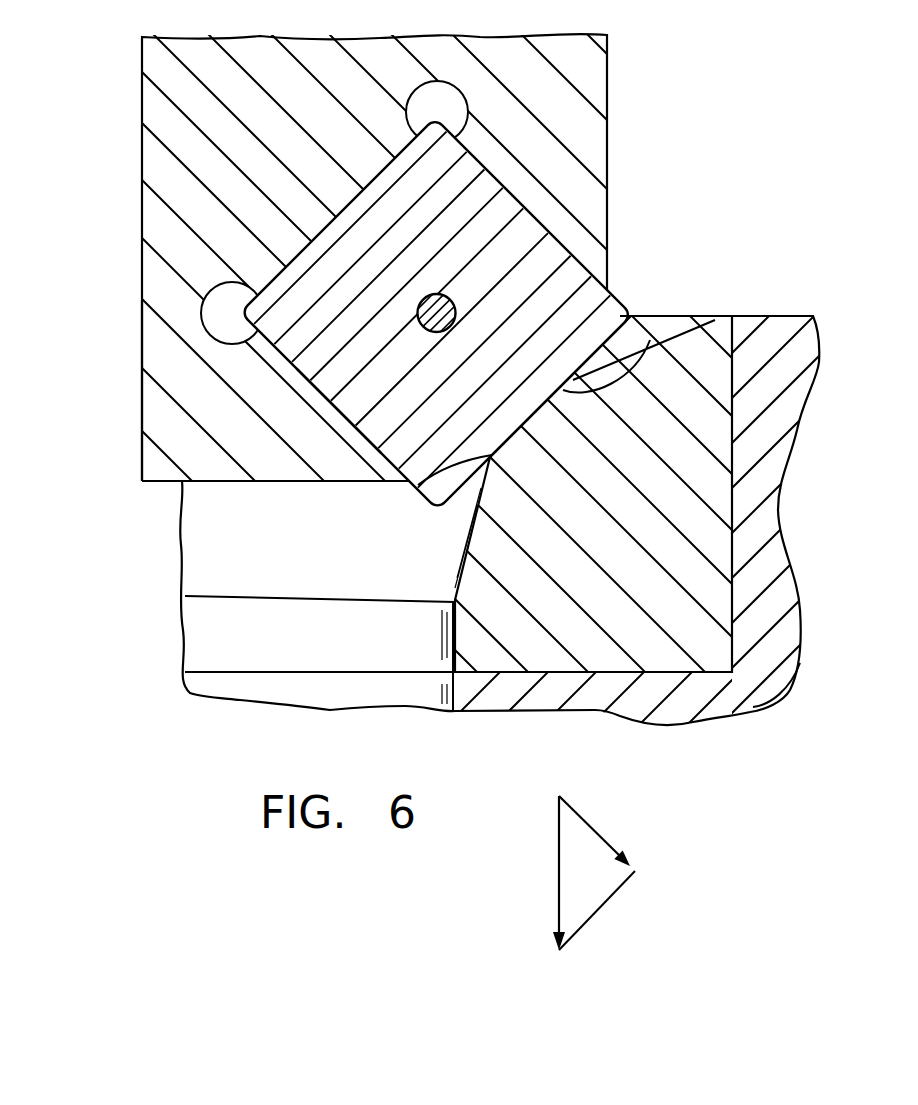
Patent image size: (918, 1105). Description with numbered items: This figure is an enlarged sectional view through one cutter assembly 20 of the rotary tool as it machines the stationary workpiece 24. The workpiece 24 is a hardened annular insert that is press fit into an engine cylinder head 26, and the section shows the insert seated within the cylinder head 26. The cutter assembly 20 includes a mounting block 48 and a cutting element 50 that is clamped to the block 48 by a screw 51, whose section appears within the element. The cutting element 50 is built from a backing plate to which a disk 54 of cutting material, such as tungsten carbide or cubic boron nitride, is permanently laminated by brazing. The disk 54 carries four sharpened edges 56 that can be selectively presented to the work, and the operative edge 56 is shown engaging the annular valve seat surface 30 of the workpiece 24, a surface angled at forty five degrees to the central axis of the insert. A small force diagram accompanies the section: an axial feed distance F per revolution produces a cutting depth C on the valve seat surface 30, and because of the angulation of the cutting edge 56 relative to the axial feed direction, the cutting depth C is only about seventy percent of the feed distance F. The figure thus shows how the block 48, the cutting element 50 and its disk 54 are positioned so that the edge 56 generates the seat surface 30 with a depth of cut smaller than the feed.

The cutter assembly 20 is at (130, 488).
The workpiece 24 is at (673, 673).
The engine cylinder head 26 is at (785, 328).
The annular valve seat surface 30 is at (423, 493).
The mounting block 48 is at (608, 123).
The cutting element 50 is at (352, 428).
The screw 51 is at (428, 294).
The disk 54 is at (553, 243).
The sharpened edges 56 is at (650, 340).
The axial feed distance F is at (556, 878).
The cutting depth C is at (598, 832).